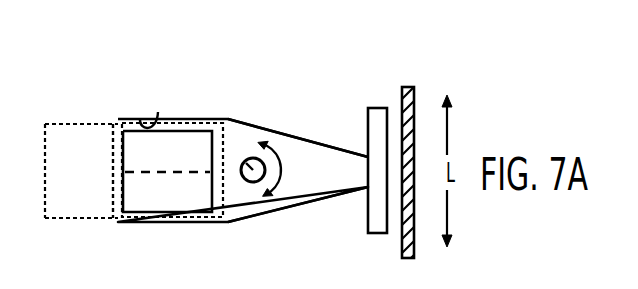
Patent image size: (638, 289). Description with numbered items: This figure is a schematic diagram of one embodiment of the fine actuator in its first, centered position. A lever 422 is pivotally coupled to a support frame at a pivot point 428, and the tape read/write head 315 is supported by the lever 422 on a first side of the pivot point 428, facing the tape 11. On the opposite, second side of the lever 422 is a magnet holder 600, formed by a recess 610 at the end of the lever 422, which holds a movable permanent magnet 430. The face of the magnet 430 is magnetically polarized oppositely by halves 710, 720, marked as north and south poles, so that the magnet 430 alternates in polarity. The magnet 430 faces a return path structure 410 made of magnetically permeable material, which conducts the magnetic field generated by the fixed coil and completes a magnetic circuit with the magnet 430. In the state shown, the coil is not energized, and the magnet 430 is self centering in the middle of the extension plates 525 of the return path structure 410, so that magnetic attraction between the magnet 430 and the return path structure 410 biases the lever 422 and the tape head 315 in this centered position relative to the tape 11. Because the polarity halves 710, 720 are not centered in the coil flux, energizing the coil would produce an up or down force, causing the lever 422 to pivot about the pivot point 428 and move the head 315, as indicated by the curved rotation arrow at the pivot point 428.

The return path structure 410 is at (77, 121).
The extension plates 525 is at (113, 133).
The magnet holder 600 is at (190, 117).
The recess 610 is at (158, 114).
The polarity half 710 is at (133, 153).
The polarity half 720 is at (133, 195).
The permanent magnet 430 is at (151, 214).
The pivot point 428 is at (245, 160).
The lever 422 is at (298, 135).
The tape read/write head 315 is at (377, 105).
The tape 11 is at (407, 92).